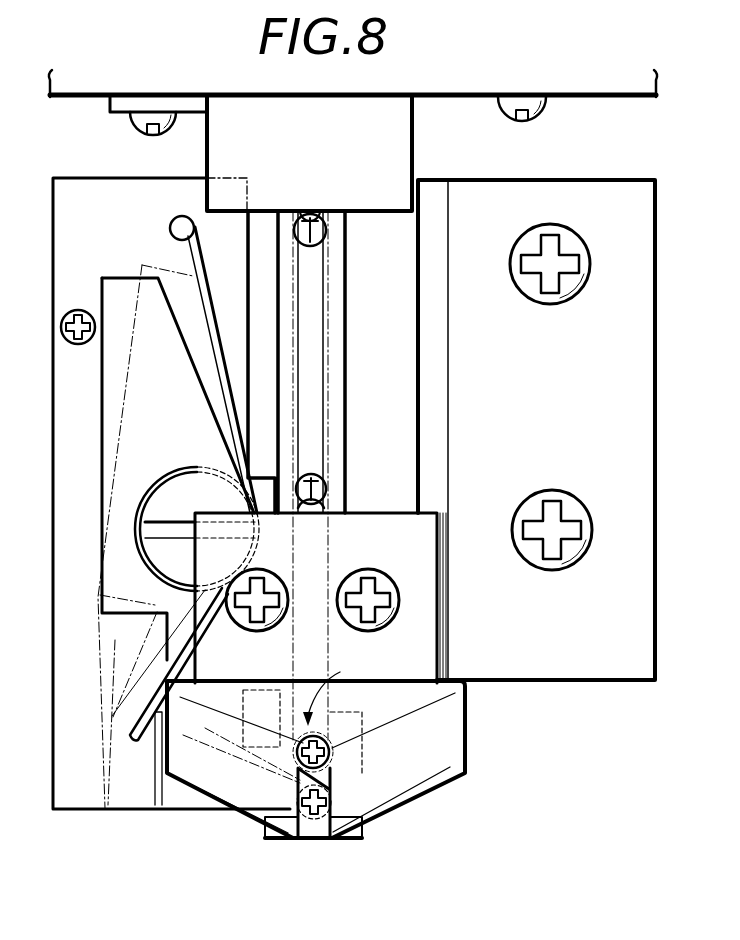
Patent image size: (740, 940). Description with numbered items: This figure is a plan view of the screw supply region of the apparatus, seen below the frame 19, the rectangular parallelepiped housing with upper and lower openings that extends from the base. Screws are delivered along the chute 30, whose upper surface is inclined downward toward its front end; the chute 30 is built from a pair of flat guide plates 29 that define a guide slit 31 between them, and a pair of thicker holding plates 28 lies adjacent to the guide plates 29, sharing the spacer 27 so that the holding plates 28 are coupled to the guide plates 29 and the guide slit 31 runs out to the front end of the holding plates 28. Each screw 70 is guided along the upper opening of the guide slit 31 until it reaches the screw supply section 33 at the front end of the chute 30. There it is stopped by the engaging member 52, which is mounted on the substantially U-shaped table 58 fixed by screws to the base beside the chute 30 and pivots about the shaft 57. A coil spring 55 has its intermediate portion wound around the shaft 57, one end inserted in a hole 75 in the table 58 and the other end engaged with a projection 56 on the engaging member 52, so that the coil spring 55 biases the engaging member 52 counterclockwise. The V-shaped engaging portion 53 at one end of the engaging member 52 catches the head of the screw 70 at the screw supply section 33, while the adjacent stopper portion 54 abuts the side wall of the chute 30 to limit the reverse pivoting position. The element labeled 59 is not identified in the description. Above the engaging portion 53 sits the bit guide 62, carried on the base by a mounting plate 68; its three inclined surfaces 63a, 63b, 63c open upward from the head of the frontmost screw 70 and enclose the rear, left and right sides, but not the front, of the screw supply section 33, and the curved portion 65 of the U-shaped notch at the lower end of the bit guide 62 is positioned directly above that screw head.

The frame 19 is at (457, 97).
The spacer 27 is at (318, 848).
The holding plates 28 is at (278, 842).
The guide plates 29 is at (335, 392).
The chute 30 is at (338, 302).
The guide slit 31 is at (310, 842).
The screw supply section 33 is at (344, 684).
The engaging member 52 is at (100, 615).
The engaging portion 53 is at (253, 820).
The stopper portion 54 is at (262, 722).
The coil spring 55 is at (133, 723).
The projection 56 is at (160, 785).
The shaft 57 is at (175, 492).
The table 58 is at (86, 184).
The screw 59 is at (68, 322).
The bit guide 62 is at (445, 790).
The inclined surface 63a is at (443, 760).
The inclined surface 63b is at (453, 695).
The inclined surface 63c is at (205, 785).
The curved portion 65 is at (330, 748).
The mounting plate 68 is at (585, 668).
The screw 70 is at (320, 232).
The hole 75 is at (180, 216).